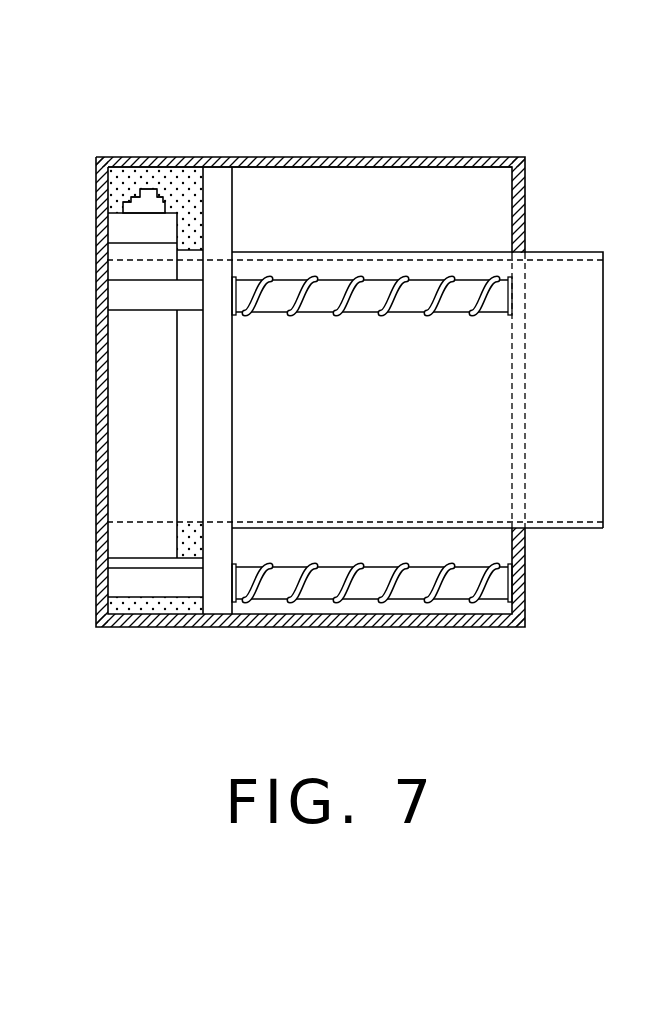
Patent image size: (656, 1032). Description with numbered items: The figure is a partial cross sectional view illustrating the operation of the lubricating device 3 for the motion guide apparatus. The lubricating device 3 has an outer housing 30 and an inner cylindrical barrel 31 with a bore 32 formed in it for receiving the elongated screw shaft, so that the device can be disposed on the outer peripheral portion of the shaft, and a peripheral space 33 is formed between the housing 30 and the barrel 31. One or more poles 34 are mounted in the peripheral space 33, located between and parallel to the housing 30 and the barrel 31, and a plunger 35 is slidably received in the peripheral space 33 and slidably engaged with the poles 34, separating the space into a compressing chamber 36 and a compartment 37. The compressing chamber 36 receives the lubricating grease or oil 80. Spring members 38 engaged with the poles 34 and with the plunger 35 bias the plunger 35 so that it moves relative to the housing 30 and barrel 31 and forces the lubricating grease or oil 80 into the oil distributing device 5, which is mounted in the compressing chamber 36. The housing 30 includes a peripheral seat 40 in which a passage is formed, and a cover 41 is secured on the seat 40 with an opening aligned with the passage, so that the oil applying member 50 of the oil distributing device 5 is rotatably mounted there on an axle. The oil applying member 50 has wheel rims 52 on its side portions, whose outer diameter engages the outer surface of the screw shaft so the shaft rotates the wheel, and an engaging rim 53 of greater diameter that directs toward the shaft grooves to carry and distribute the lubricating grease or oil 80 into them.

The lubricating device 3 is at (432, 90).
The oil distributing device 5 is at (142, 189).
The outer housing 30 is at (352, 157).
The inner cylindrical barrel 31 is at (577, 530).
The bore 32 is at (570, 514).
The peripheral space 33 is at (386, 170).
The poles 34 is at (143, 578).
The plunger 35 is at (223, 180).
The compressing chamber 36 is at (166, 604).
The compartment 37 is at (488, 183).
The spring members 38 is at (439, 312).
The seat 40 is at (118, 267).
The cover 41 is at (122, 228).
The oil applying member 50 is at (138, 193).
The wheel rims 52 is at (122, 203).
The engaging rim 53 is at (157, 185).
The lubricating grease or oil 80 is at (188, 183).